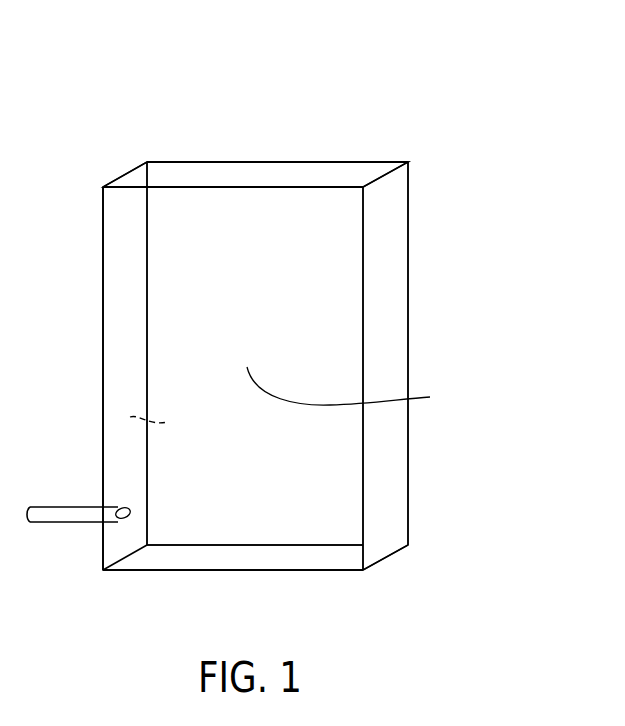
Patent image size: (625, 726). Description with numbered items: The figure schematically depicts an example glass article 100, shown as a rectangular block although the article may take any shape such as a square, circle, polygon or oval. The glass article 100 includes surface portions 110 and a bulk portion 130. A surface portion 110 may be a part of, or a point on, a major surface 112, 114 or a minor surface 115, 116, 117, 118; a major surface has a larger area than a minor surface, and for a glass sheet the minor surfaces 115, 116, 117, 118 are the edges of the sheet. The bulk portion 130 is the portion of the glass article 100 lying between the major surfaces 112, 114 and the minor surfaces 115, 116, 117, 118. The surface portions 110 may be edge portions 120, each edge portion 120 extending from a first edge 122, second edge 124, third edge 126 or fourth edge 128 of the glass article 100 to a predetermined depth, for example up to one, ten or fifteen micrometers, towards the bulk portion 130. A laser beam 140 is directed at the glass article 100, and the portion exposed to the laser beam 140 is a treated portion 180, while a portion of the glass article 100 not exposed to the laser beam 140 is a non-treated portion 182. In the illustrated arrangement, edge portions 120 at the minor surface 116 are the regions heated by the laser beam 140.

The glass article 100 is at (473, 125).
The surface portions 110 is at (262, 166).
The major surface 112 is at (259, 310).
The major surface 114 is at (300, 236).
The minor surface 115 is at (390, 306).
The minor surface 116 is at (128, 373).
The minor surface 117 is at (364, 170).
The minor surface 118 is at (303, 555).
The edge portion 120 is at (382, 533).
The first edge 122 is at (365, 462).
The second edge 124 is at (103, 463).
The third edge 126 is at (199, 186).
The fourth edge 128 is at (155, 573).
The bulk portion 130 is at (358, 389).
The laser beam 140 is at (53, 523).
The treated portion 180 is at (131, 509).
The non-treated portion 182 is at (171, 421).